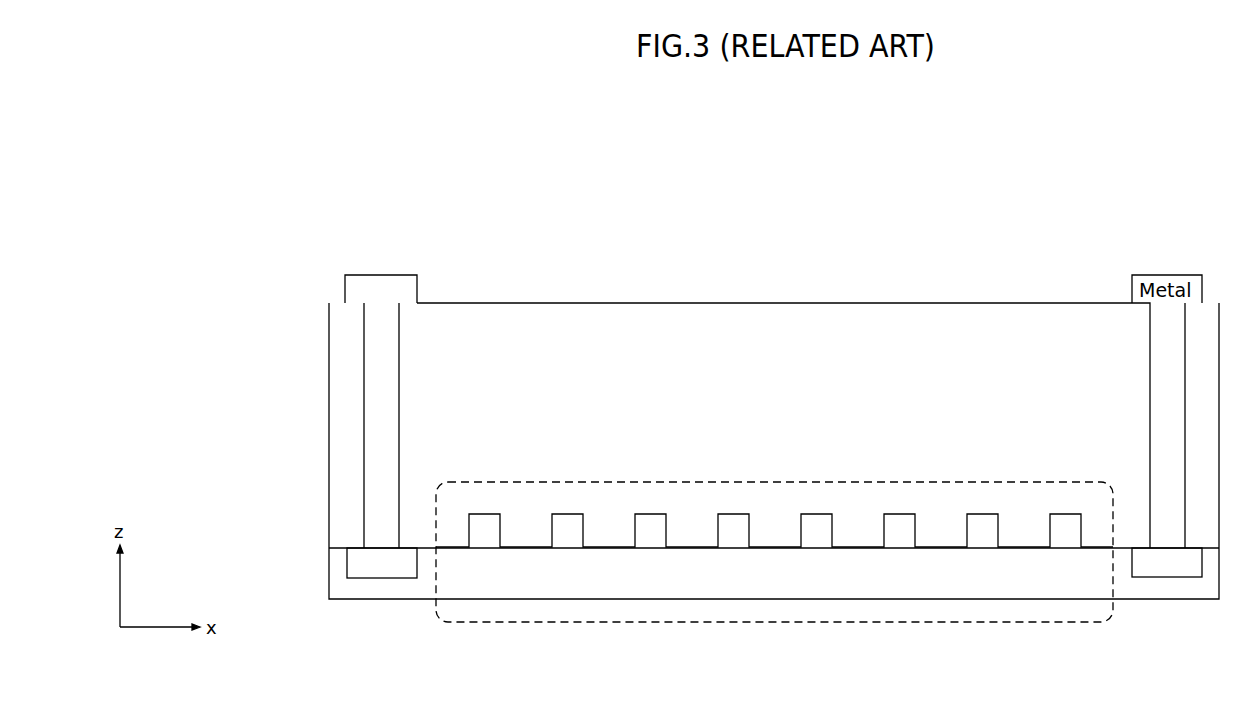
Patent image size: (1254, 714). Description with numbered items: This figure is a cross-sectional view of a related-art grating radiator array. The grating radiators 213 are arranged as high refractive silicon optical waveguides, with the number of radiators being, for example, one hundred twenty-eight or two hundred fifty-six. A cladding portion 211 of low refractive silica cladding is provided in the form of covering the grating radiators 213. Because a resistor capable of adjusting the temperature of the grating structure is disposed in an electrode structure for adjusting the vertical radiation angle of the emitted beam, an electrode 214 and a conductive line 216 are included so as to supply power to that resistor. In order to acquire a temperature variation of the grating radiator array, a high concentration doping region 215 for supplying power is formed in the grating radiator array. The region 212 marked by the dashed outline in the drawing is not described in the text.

The cladding portion 211 is at (1078, 317).
The joule heating adjustment region (intrinsic silicon) 212 is at (622, 482).
The grating radiators 213 is at (818, 522).
The electrode 214 is at (380, 275).
The high concentration doping region 215 is at (347, 557).
The conductive line 216 is at (381, 402).